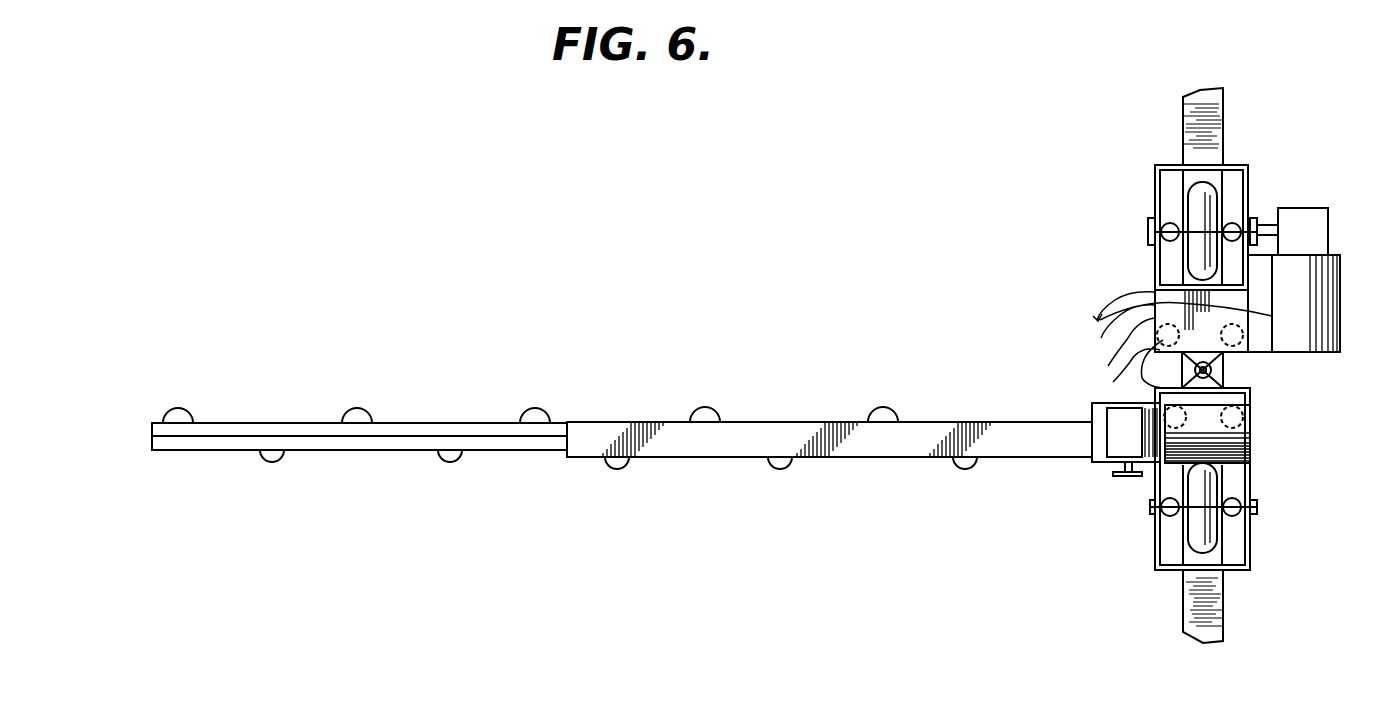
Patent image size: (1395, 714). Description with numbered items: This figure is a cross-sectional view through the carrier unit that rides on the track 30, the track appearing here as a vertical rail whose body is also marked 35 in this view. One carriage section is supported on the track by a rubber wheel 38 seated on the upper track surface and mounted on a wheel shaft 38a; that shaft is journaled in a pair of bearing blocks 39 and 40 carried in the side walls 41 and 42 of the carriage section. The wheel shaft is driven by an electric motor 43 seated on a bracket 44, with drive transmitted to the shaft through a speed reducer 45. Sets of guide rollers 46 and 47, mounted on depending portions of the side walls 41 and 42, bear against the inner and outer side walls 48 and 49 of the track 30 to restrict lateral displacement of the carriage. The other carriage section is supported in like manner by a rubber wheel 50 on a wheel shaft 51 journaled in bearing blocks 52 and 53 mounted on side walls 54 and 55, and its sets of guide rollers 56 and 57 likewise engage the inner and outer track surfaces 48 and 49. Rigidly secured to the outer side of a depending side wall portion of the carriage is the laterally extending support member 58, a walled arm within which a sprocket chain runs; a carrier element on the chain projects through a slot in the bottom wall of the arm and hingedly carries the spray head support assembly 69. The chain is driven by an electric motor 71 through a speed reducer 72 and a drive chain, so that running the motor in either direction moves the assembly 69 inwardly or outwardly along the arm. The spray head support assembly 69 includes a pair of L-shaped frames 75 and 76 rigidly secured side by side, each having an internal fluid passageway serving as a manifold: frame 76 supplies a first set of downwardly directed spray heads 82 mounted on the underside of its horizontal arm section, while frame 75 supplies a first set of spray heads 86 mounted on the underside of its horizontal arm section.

The track 30 is at (1182, 603).
The vertical guide post 35 is at (1212, 105).
The rubber wheel 38 is at (1188, 208).
The wheel shaft 38a is at (1223, 228).
The bearing block 39 is at (1148, 232).
The bearing block 40 is at (1273, 212).
The side wall 41 is at (1155, 187).
The side wall 42 is at (1247, 165).
The electric motor 43 is at (1340, 317).
The bracket 44 is at (1263, 345).
The speed reducer 45 is at (1327, 238).
The guide rollers 46 is at (1170, 240).
The guide rollers 47 is at (1253, 218).
The inner side wall of track 48 is at (1182, 138).
The outer side wall of track 49 is at (1212, 135).
The rubber wheel 50 is at (1213, 475).
The wheel shaft 51 is at (1240, 537).
The bearing block 52 is at (1150, 507).
The bearing block 53 is at (1257, 508).
The side wall 54 is at (1155, 547).
The side wall 55 is at (1252, 560).
The guide rollers 56 is at (1160, 492).
The guide rollers 57 is at (1160, 415).
The support member 58 is at (788, 405).
The spray head support assembly 69 is at (333, 450).
The electric motor 71 is at (1252, 443).
The speed reducer 72 is at (1140, 445).
The L-shaped frame 75 is at (285, 401).
The L-shaped frame 76 is at (388, 449).
The spray heads 82 is at (267, 460).
The spray heads 86 is at (188, 412).